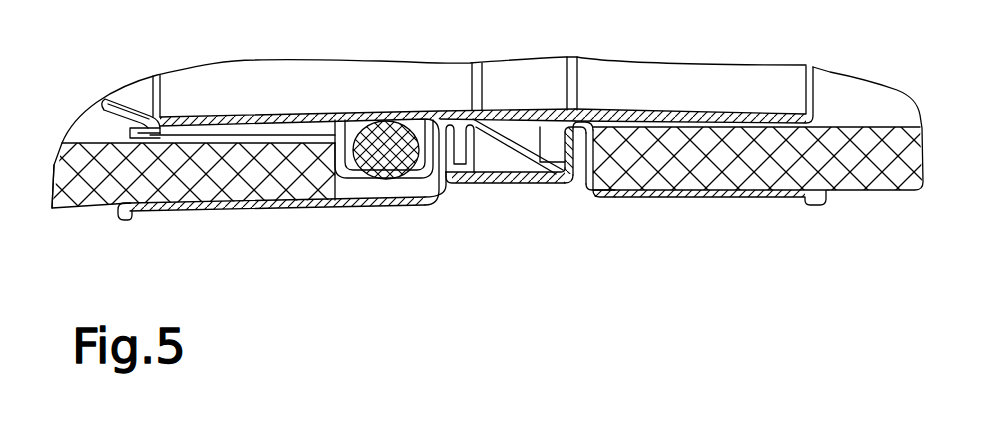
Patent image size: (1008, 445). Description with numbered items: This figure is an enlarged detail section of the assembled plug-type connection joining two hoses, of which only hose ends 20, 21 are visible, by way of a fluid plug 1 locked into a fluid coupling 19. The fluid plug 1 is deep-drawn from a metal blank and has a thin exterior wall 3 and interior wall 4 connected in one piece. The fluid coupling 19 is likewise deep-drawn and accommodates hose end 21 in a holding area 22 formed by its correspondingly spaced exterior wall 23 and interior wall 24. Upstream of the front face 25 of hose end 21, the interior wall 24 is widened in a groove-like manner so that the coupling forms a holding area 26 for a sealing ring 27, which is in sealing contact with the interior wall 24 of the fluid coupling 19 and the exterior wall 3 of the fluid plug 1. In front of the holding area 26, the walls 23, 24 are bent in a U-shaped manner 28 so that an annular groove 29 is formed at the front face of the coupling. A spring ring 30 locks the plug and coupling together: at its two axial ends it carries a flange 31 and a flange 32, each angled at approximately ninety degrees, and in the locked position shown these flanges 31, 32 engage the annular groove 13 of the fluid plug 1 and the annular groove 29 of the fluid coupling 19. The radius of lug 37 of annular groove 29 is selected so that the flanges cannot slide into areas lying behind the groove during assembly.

The fluid plug 1 is at (355, 110).
The exterior wall 3 is at (628, 194).
The interior wall 4 is at (655, 112).
The annular groove 13 is at (584, 117).
The fluid coupling 19 is at (196, 214).
The hose end 20 is at (860, 196).
The hose end 21 is at (73, 213).
The holding area 22 is at (245, 165).
The exterior wall 23 is at (147, 214).
The interior wall 24 is at (103, 106).
The front face 25 is at (343, 190).
The holding area 26 is at (423, 190).
The sealing ring 27 is at (400, 112).
The U-shaped bend 28 is at (503, 184).
The annular groove 29 is at (484, 111).
The spring ring 30 is at (553, 190).
The flange 31 is at (457, 182).
The flange 32 is at (580, 180).
The lug 37 is at (470, 178).